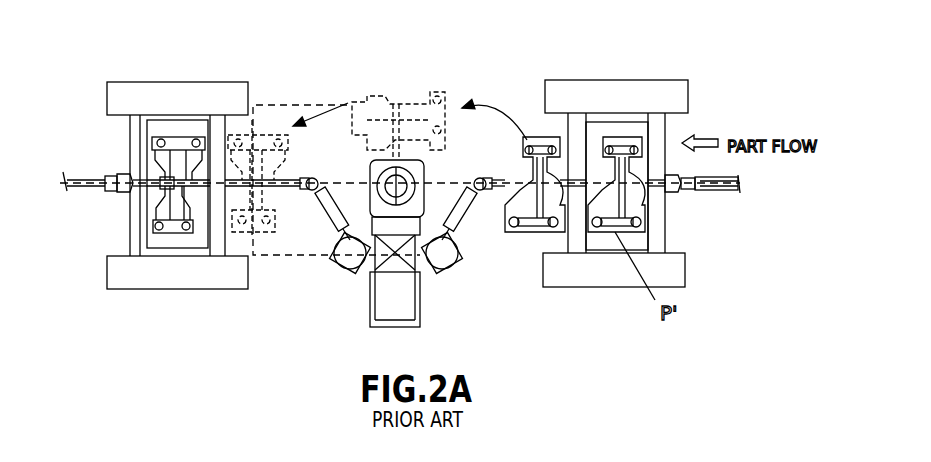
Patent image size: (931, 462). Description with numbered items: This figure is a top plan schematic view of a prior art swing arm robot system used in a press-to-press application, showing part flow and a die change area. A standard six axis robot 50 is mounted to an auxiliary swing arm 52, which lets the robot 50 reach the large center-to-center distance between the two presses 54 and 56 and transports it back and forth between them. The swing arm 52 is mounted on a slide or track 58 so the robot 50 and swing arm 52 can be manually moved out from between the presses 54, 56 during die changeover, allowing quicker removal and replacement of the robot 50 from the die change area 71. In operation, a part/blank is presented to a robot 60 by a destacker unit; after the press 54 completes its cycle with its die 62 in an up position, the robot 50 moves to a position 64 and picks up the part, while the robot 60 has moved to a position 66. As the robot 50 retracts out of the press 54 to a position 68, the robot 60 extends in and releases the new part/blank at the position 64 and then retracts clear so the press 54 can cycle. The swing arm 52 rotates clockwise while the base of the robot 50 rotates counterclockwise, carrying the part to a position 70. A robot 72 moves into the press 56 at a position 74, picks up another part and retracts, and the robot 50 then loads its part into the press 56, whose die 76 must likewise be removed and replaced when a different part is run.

The six axis robot 50 is at (453, 237).
The swing arm 52 is at (440, 200).
The press 54 is at (618, 79).
The press 56 is at (153, 82).
The slide or track 58 is at (425, 313).
The robot 60 is at (723, 192).
The die 62 is at (640, 122).
The position 64 is at (615, 127).
The position 66 is at (705, 227).
The position 68 is at (540, 130).
The position 70 is at (257, 130).
The die change area 71 is at (292, 258).
The robot 72 is at (75, 192).
The position 74 is at (175, 127).
The die 76 is at (173, 248).